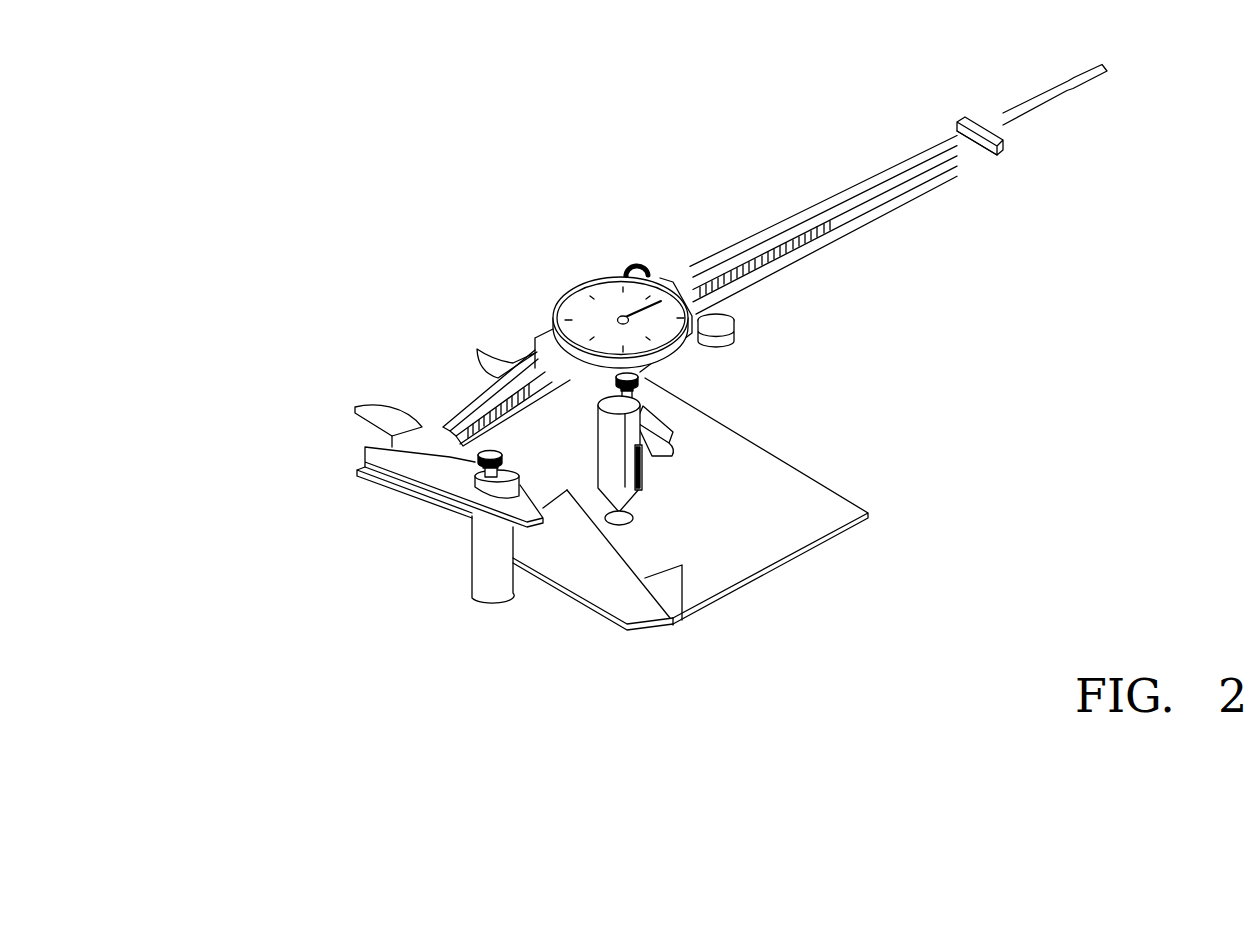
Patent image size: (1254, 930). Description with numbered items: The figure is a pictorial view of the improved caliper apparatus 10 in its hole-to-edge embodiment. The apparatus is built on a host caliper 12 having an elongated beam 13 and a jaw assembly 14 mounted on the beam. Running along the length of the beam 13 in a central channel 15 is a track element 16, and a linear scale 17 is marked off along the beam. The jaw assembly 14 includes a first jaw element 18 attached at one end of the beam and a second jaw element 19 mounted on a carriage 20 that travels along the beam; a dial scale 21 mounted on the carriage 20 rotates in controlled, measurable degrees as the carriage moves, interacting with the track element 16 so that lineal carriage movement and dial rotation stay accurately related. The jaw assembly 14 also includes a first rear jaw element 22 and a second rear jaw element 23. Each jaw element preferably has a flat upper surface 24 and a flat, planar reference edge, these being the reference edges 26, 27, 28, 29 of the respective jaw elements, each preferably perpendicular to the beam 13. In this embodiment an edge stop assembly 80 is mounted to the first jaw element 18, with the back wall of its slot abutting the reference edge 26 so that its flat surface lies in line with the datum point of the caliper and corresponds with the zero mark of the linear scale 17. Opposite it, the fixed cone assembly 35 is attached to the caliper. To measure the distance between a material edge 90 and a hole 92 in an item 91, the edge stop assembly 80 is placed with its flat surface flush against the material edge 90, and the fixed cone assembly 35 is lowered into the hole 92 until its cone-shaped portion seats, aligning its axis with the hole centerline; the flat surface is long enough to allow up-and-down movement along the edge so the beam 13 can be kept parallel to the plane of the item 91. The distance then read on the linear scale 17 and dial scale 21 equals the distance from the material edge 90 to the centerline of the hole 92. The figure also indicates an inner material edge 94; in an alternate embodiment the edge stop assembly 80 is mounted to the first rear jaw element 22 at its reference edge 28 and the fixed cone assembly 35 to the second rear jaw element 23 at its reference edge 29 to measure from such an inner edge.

The improved caliper apparatus 10 is at (615, 118).
The host caliper 12 is at (812, 207).
The elongated beam 13 is at (843, 240).
The jaw assembly 14 is at (390, 398).
The central channel 15 is at (893, 176).
The track element 16 is at (952, 155).
The linear scale 17 is at (433, 453).
The first jaw element 18 is at (447, 500).
The second jaw element 19 is at (672, 442).
The carriage 20 is at (665, 272).
The dial scale 21 is at (596, 298).
The first rear jaw element 22 is at (369, 399).
The second rear jaw element 23 is at (488, 354).
The flat upper surface 24 is at (437, 479).
The reference edge 26 is at (567, 490).
The reference edge 27 is at (652, 456).
The reference edge 28 is at (355, 407).
The reference edge 29 is at (499, 357).
The fixed cone assembly 35 is at (629, 499).
The edge stop assembly 80 is at (483, 572).
The material edge 90 is at (552, 587).
The item to be measured 91 is at (850, 528).
The hole 92 is at (624, 524).
The inner material edge 94 is at (683, 565).